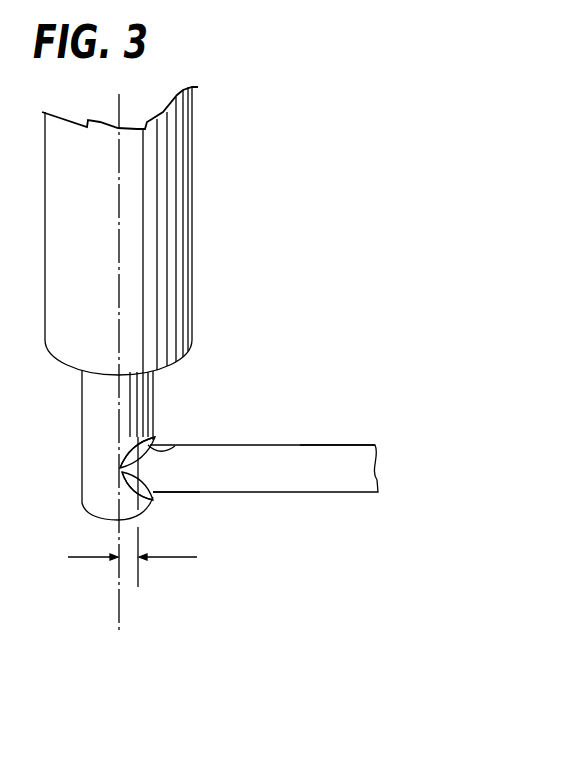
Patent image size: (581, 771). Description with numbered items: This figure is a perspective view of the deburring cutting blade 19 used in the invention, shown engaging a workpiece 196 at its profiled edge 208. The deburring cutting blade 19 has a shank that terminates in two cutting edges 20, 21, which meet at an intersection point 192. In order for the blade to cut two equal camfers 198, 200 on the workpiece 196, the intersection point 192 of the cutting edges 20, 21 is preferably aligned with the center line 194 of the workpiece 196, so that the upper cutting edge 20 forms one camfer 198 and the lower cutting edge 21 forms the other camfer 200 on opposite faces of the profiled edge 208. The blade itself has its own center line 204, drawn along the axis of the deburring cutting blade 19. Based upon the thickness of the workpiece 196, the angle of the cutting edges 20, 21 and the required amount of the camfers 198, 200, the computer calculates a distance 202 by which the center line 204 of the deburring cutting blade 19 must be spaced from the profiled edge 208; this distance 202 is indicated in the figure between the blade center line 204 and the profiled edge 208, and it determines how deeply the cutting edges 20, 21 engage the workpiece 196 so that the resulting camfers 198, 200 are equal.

The deburring cutting blade 19 is at (82, 401).
The cutting edge 20 is at (150, 442).
The cutting edge 21 is at (157, 498).
The intersection point 192 is at (118, 466).
The center line 194 is at (358, 463).
The workpiece 196 is at (322, 445).
The camfer 198 is at (160, 450).
The camfer 200 is at (142, 492).
The distance 202 is at (163, 558).
The center line 204 is at (119, 274).
The profiled edge 208 is at (120, 462).